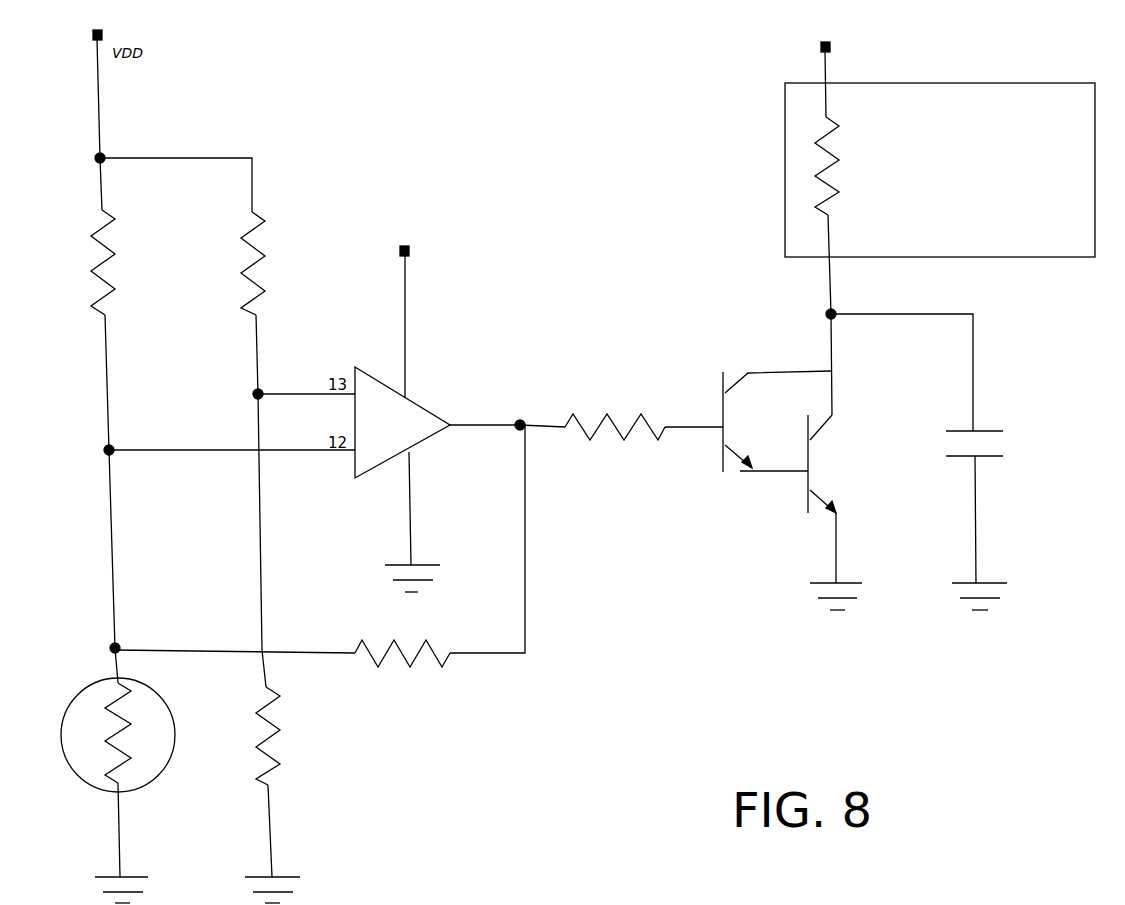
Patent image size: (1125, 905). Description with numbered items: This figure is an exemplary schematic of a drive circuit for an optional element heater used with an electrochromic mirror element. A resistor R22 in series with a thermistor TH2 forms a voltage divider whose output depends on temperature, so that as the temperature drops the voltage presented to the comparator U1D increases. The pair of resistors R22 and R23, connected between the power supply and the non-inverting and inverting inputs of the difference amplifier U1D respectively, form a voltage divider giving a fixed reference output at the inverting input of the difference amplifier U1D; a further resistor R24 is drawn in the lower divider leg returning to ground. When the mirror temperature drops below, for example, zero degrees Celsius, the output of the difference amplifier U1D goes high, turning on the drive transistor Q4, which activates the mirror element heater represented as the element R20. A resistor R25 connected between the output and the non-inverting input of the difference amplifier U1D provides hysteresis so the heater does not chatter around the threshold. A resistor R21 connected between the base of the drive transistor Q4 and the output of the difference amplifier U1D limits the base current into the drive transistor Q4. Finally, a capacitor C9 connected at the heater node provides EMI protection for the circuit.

The element heater R20 is at (940, 178).
The resistor R21 is at (644, 400).
The resistor R22 is at (127, 403).
The resistor R23 is at (278, 449).
The 33k resistor R24 is at (288, 795).
The resistor R25 is at (280, 686).
The capacitor C9 is at (952, 462).
The drive transistor Q4 is at (805, 462).
The difference amplifier U1D is at (437, 419).
The thermistor TH2 is at (143, 775).